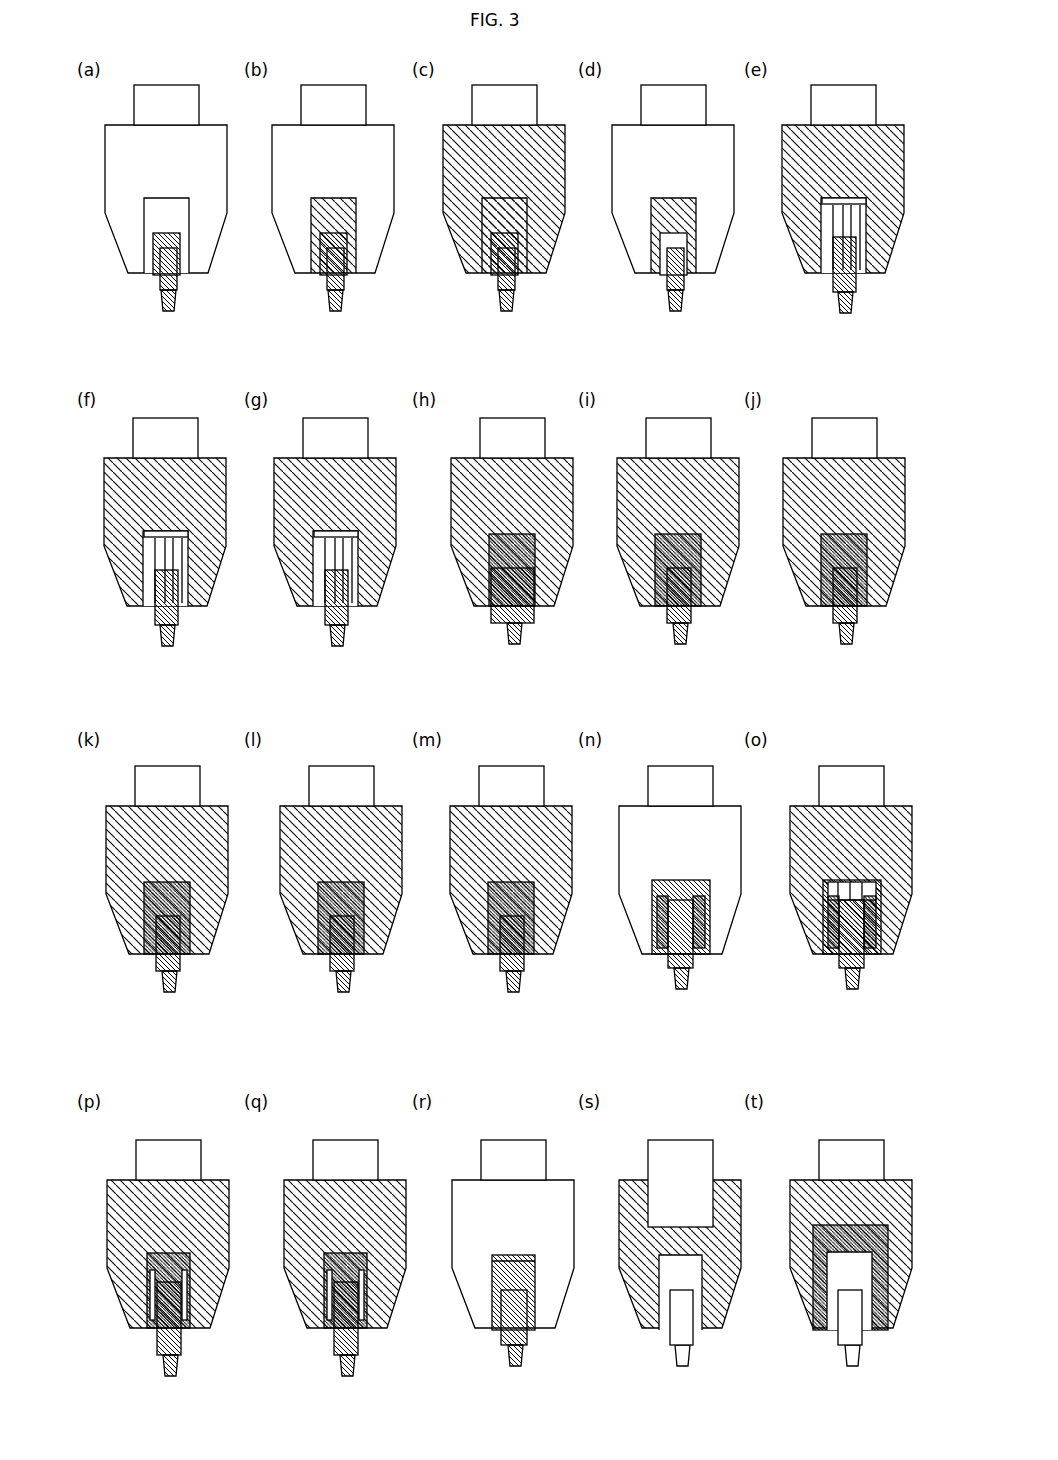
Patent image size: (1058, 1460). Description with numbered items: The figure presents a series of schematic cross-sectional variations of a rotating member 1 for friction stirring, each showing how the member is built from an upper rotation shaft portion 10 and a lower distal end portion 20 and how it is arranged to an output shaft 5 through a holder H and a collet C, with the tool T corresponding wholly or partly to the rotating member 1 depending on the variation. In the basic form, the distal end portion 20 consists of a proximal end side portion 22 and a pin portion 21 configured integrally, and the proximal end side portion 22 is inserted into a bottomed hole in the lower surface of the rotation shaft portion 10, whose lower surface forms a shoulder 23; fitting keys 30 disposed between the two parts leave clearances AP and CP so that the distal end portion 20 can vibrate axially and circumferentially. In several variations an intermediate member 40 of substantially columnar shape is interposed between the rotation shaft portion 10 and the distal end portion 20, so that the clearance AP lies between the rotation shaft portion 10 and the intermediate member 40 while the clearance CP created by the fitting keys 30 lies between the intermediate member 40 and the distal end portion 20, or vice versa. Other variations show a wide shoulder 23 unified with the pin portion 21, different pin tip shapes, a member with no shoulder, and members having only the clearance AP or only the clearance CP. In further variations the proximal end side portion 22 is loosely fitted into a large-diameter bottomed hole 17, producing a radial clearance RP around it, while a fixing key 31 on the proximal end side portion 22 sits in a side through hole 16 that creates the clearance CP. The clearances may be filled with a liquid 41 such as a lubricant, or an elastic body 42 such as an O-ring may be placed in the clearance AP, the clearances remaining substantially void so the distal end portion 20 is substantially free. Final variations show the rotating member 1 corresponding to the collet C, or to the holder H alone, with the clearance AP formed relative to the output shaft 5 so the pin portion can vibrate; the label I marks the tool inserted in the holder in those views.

The rotating member for friction stirring 1 is at (294, 1377).
The output shaft 5 is at (524, 656).
The rotation shaft portion 10 is at (473, 542).
The side through hole 16 is at (658, 924).
The large-diameter bottomed hole 17 is at (670, 910).
The distal end portion 20 is at (805, 1338).
The pin portion 21 is at (339, 1353).
The proximal end side portion 22 is at (337, 1334).
The shoulder 23 is at (529, 840).
The fitting keys 30 is at (535, 594).
The fixing key 31 is at (706, 952).
The intermediate member 40 is at (829, 914).
The liquid 41 is at (152, 1267).
The elastic body 42 is at (328, 1263).
The clearance AP is at (868, 231).
The clearance CP is at (698, 615).
The clearance RP is at (707, 912).
The tool T is at (190, 255).
The holder H is at (175, 158).
The collet C is at (175, 221).
The insert I is at (685, 1328).